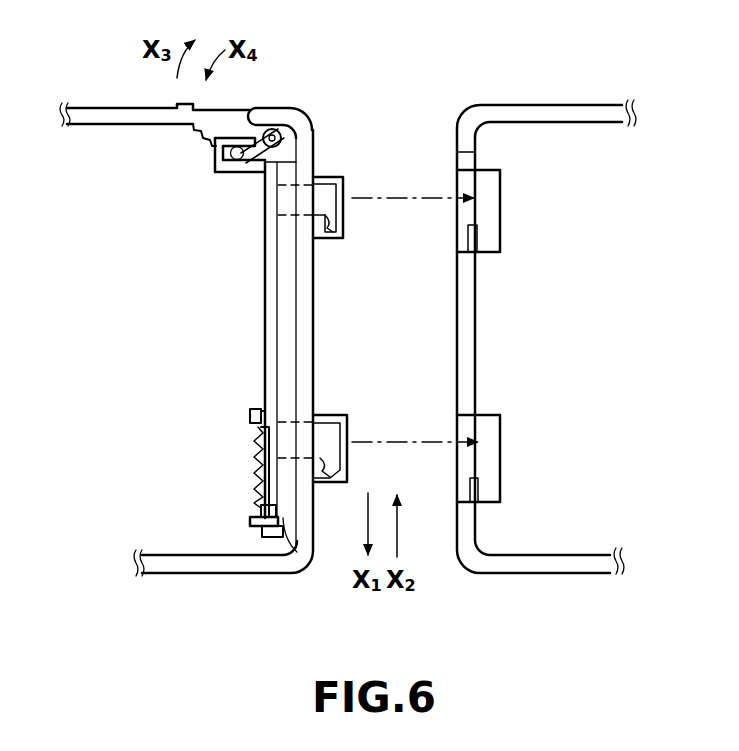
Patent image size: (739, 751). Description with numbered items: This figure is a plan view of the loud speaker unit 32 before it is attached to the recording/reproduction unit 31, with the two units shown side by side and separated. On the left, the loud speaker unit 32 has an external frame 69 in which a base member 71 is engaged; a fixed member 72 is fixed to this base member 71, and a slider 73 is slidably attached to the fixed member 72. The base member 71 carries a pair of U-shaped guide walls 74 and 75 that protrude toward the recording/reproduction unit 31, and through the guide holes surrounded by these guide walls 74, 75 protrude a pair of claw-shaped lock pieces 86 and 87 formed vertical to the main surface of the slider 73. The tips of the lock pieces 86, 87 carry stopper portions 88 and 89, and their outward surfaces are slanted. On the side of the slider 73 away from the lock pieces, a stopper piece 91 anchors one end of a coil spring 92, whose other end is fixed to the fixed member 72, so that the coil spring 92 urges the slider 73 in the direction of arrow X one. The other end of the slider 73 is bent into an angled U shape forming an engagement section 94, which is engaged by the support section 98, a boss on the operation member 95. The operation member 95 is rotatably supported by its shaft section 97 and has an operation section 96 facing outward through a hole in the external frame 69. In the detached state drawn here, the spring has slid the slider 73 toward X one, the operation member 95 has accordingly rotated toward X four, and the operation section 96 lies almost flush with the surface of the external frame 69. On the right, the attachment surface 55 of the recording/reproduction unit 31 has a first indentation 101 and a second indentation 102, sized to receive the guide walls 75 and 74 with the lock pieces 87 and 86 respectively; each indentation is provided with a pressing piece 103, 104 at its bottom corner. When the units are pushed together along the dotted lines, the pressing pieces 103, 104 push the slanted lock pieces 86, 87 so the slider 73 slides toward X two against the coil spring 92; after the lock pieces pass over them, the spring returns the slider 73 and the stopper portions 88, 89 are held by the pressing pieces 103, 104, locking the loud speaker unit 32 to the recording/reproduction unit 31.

The recording/reproduction unit 31 is at (577, 98).
The loud speaker unit 32 is at (188, 103).
The attachment surface 55 is at (457, 321).
The external frame 69 is at (221, 576).
The base member 71 is at (317, 287).
The fixed member 72 is at (301, 576).
The slider 73 is at (262, 311).
The guide wall 74 is at (322, 418).
The guide wall 75 is at (322, 177).
The lock piece 86 is at (345, 425).
The lock piece 87 is at (323, 195).
The stopper portion 88 is at (318, 484).
The stopper portion 89 is at (322, 234).
The stopper piece 91 is at (250, 412).
The coil spring 92 is at (250, 470).
The engagement section 94 is at (215, 165).
The operation member 95 is at (200, 148).
The operation section 96 is at (232, 110).
The shaft section 97 is at (283, 129).
The support section 98 is at (236, 160).
The first indentation 101 is at (457, 180).
The second indentation 102 is at (457, 425).
The pressing piece 103 is at (468, 232).
The pressing piece 104 is at (470, 490).